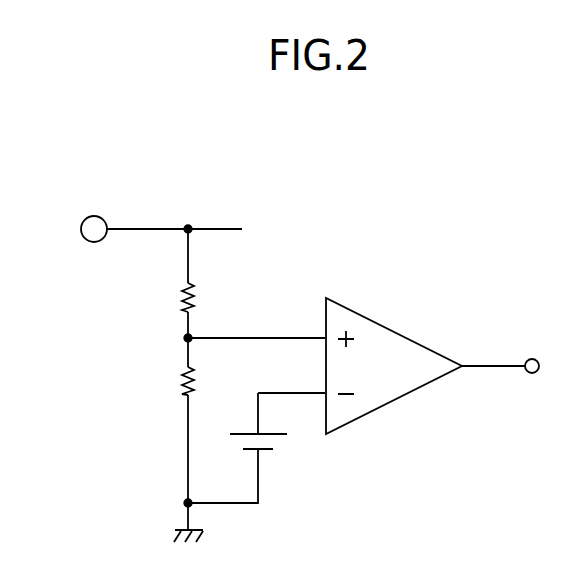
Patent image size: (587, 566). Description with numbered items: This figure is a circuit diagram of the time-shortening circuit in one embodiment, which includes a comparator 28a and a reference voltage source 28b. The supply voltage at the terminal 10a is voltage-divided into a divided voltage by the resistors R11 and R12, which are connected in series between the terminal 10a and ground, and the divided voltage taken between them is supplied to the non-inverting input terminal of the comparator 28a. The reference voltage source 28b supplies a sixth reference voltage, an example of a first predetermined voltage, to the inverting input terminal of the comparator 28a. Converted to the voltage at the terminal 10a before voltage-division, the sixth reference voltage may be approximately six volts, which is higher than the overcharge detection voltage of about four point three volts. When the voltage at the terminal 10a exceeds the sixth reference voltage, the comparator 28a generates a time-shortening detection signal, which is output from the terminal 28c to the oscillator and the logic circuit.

The terminal 10a is at (97, 216).
The resistor R11 is at (163, 298).
The resistor R12 is at (163, 382).
The comparator 28a is at (389, 328).
The reference voltage source 28b is at (250, 430).
The terminal 28c is at (532, 359).